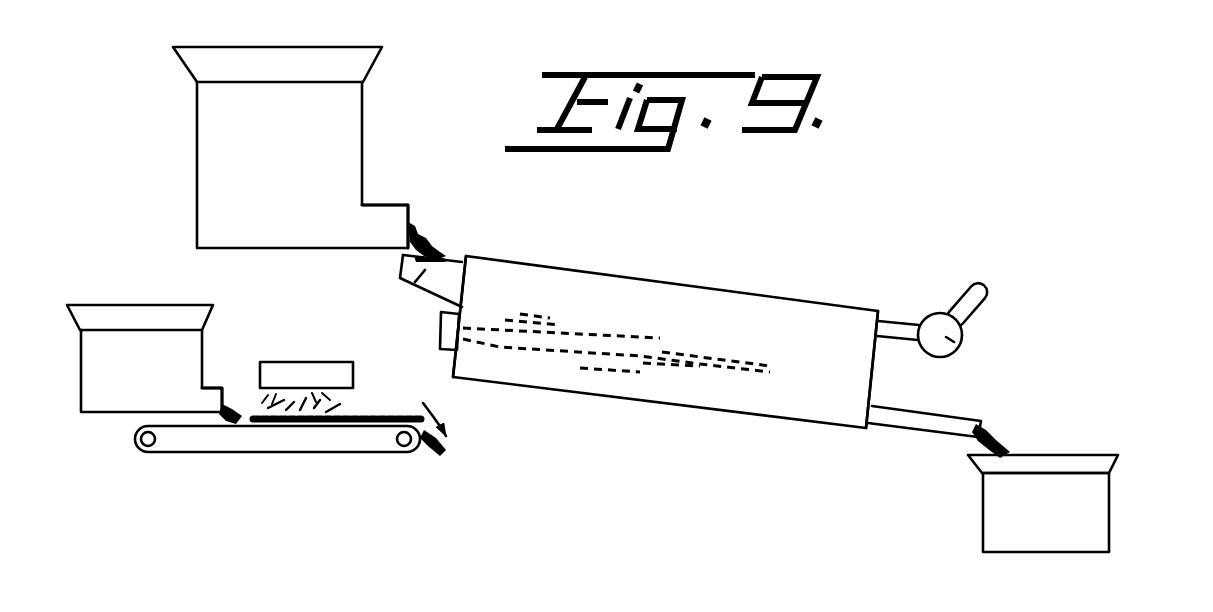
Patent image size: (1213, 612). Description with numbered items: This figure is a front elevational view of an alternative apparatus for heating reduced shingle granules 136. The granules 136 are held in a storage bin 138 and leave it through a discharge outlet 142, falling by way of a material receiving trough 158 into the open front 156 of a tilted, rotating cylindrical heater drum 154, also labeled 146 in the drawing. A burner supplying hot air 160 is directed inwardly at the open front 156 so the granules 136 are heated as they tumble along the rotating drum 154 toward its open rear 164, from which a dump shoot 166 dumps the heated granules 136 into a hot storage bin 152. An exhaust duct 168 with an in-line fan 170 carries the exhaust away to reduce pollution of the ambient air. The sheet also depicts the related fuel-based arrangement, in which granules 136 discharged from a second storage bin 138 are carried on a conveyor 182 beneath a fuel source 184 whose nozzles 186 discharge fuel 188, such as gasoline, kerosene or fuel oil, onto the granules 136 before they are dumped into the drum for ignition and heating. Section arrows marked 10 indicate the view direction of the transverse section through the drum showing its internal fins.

The section view direction arrows 10- 10 is at (652, 245).
The shingle granules 136 is at (423, 212).
The storage bin 138 is at (196, 137).
The discharge outlet 142 is at (380, 203).
The trommel screen drum 146 is at (665, 304).
The cylindrical heater drum 154 is at (560, 265).
The hot storage bin 152 is at (1110, 500).
The open front 156 is at (450, 373).
The material receiving trough 158 is at (403, 281).
The burner supplying hot air 160 is at (441, 333).
The open rear 164 is at (879, 372).
The dump shoot 166 is at (963, 418).
The exhaust duct 168 is at (898, 320).
The in-line fan 170 is at (962, 334).
The conveyor 182 is at (204, 453).
The fuel source 184 is at (305, 375).
The nozzles 186 is at (287, 397).
The fuel 188 is at (307, 393).